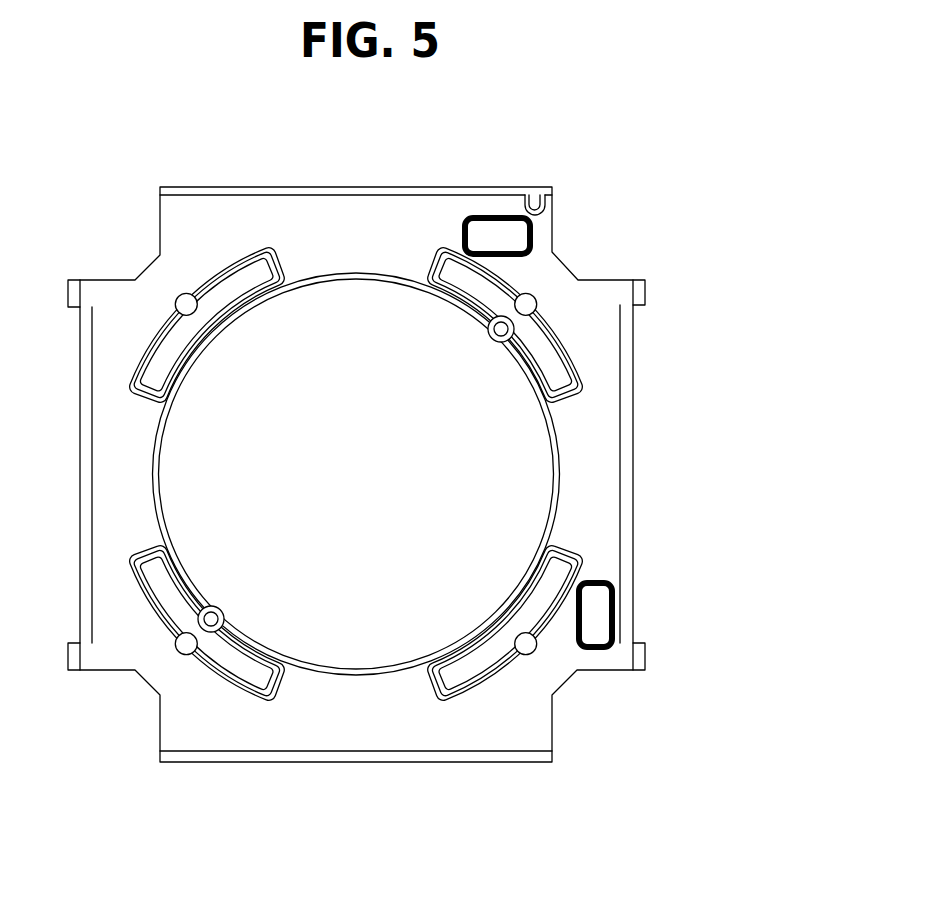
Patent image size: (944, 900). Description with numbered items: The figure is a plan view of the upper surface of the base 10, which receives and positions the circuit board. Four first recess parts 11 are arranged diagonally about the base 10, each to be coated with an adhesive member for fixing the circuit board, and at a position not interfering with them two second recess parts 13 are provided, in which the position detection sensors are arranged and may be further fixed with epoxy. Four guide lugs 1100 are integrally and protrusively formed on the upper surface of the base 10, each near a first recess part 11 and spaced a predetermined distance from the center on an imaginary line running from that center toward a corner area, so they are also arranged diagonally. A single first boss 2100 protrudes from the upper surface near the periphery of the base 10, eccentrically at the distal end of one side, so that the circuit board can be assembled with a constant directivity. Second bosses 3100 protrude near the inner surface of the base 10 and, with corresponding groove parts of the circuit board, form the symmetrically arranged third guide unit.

The base 10 is at (600, 500).
The first recess part 11 is at (557, 373).
The second recess part 13 is at (478, 228).
The guide lug 1100 is at (537, 297).
The first boss 2100 is at (537, 203).
The second boss 3100 is at (213, 627).